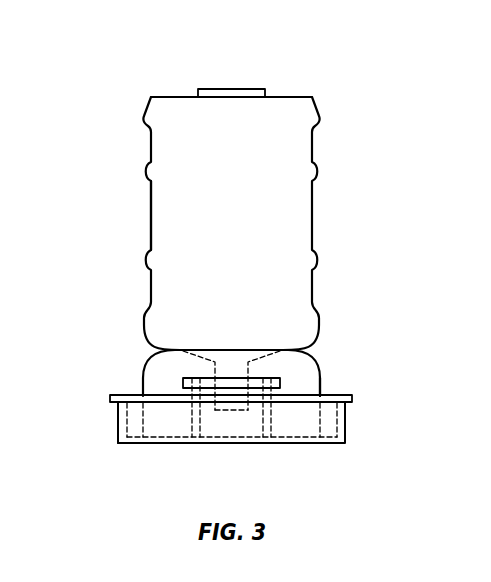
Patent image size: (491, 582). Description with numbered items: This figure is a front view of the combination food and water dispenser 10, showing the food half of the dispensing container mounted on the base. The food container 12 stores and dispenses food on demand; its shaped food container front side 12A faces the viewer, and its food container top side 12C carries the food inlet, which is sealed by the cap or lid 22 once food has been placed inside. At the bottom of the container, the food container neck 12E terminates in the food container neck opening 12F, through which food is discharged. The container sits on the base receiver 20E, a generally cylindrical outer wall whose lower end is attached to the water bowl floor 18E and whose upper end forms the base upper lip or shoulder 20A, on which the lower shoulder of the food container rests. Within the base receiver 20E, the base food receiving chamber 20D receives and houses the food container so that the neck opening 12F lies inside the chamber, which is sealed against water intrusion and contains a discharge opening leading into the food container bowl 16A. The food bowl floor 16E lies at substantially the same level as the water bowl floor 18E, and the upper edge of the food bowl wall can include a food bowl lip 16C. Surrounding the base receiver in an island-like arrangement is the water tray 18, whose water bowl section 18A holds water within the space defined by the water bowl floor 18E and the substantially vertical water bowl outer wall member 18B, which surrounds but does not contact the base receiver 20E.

The combination food and water dispenser 10 is at (118, 43).
The food container 12 is at (320, 213).
The food container front side 12A is at (165, 213).
The food container top side 12C is at (176, 96).
The food container neck 12E is at (216, 370).
The food container neck opening 12F is at (224, 416).
The food container bowl 16A is at (255, 413).
The food bowl lip 16C is at (282, 384).
The food bowl floor 16E is at (228, 438).
The water tray 18 is at (353, 423).
The water bowl section 18A is at (135, 412).
The water bowl outer wall member 18B is at (117, 425).
The water bowl floor 18E is at (328, 438).
The base upper lip or shoulder 20A is at (223, 349).
The base food receiving chamber 20D is at (312, 378).
The base receiver 20E is at (150, 355).
The cap or lid 22 is at (233, 88).